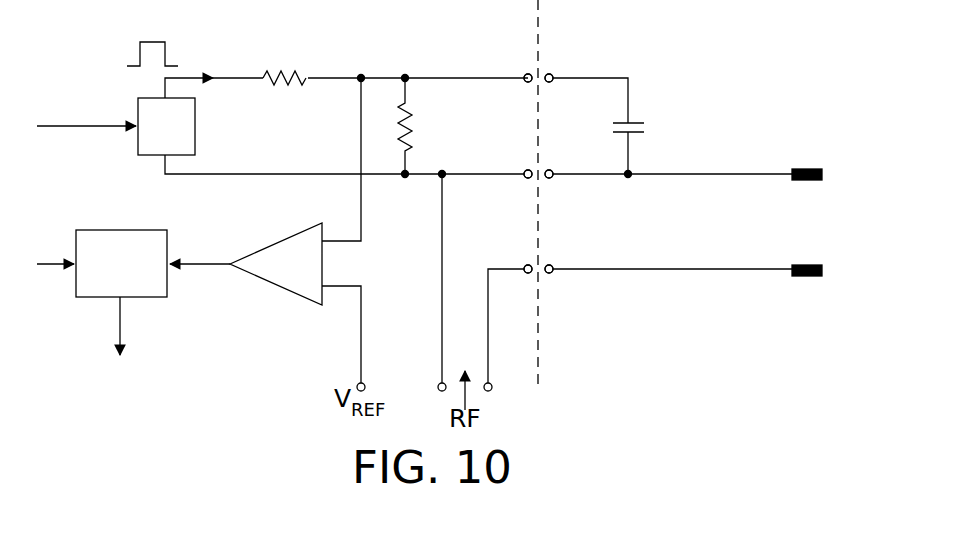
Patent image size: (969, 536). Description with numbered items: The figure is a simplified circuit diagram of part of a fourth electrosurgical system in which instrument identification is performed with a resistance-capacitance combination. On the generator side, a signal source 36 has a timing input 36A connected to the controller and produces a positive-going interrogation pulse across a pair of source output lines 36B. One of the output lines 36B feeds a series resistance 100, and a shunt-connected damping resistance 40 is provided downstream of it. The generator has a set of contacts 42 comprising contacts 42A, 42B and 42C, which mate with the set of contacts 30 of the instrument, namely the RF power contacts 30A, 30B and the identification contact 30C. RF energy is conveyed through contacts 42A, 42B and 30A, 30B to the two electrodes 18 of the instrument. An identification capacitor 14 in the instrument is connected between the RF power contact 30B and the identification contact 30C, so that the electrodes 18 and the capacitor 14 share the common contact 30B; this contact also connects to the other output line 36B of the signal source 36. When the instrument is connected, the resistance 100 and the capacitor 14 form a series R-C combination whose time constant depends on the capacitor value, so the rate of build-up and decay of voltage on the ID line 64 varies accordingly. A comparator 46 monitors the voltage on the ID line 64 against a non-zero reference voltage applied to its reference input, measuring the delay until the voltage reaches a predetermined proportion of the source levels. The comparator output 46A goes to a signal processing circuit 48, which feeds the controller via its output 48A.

The identification capacitor 14 is at (648, 125).
The electrodes 18 is at (807, 181).
The set of contacts 30 is at (552, 56).
The RF power contact 30A is at (551, 274).
The RF power contact 30B is at (551, 179).
The identification contact 30C is at (551, 83).
The signal source 36 is at (137, 140).
The timing input 36A is at (66, 125).
The source output lines 36B is at (238, 80).
The damping resistance 40 is at (410, 108).
The set of contacts 42 is at (525, 56).
The generator contact 42A is at (526, 274).
The generator contact 42B is at (526, 179).
The generator contact 42C is at (526, 83).
The comparator 46 is at (279, 290).
The comparator output 46A is at (198, 264).
The signal processing circuit 48 is at (98, 230).
The signal processing circuit output 48A is at (122, 330).
The ID line 64 is at (608, 78).
The series resistance 100 is at (287, 72).